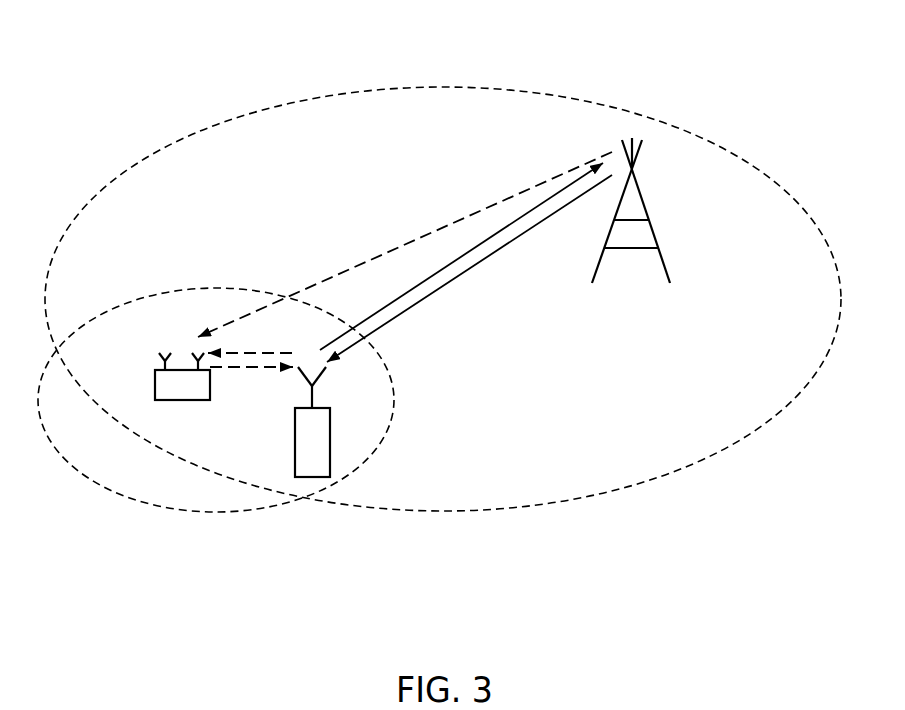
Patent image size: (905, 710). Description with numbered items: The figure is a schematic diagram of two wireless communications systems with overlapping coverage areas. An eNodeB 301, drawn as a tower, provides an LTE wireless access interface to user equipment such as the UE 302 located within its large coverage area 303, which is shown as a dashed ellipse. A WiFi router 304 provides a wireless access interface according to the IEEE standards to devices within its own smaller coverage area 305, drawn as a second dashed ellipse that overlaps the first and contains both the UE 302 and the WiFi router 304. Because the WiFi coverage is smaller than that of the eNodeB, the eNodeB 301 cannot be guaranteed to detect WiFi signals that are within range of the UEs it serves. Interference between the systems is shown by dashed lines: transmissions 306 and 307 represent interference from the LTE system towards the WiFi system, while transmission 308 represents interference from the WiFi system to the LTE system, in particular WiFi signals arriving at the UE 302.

The eNodeB 301 is at (645, 195).
The UE 302 is at (332, 443).
The coverage area 303 is at (457, 88).
The WiFi router 304 is at (178, 402).
The coverage area 305 is at (188, 513).
The transmission 306 is at (370, 262).
The transmission 307 is at (253, 353).
The transmission 308 is at (252, 368).